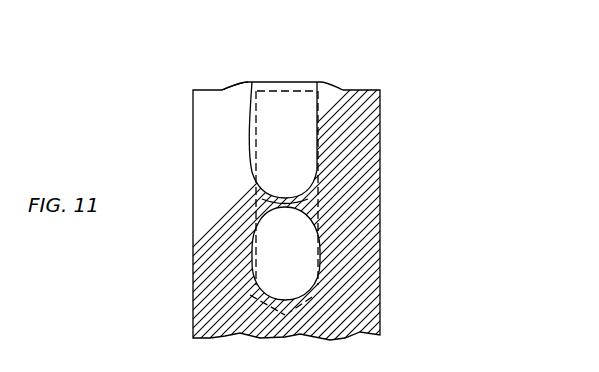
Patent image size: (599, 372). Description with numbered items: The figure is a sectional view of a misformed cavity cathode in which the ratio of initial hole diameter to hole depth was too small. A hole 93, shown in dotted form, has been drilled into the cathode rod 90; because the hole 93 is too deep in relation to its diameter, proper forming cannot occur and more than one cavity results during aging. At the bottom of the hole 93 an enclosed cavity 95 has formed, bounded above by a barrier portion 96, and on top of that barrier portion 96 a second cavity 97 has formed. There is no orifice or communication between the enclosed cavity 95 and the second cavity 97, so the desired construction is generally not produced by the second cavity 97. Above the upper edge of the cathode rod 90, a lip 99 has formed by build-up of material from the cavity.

The cathode rod 90 is at (370, 190).
The hole 93 is at (320, 130).
The enclosed cavity 95 is at (322, 259).
The barrier portion 96 is at (313, 207).
The second cavity 97 is at (307, 142).
The lip 99 is at (246, 84).